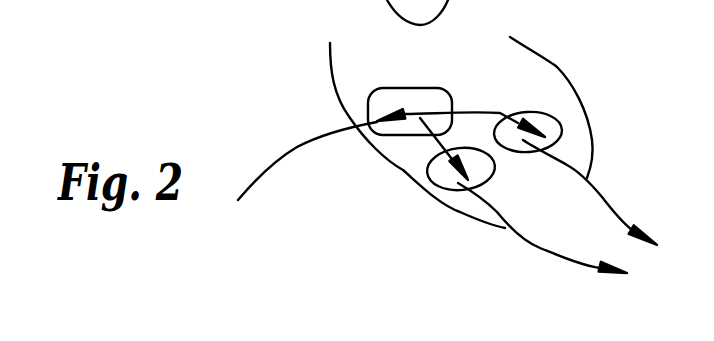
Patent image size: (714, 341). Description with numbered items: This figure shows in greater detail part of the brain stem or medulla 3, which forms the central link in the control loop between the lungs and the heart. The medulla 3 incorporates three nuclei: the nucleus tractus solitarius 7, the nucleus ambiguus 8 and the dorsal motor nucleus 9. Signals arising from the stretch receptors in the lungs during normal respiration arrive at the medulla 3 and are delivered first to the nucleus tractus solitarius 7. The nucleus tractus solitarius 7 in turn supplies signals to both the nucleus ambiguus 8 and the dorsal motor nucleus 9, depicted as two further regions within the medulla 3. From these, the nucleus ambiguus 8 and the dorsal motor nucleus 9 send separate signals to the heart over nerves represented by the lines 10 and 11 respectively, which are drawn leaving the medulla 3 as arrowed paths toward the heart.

The medulla 3 is at (330, 93).
The nucleus tractus solitarius 7 is at (387, 88).
The nucleus ambiguus 8 is at (433, 188).
The dorsal motor nucleus 9 is at (555, 67).
The nerves from the nucleus ambiguus 10 is at (536, 250).
The nerves from the dorsal motor nucleus 11 is at (607, 202).